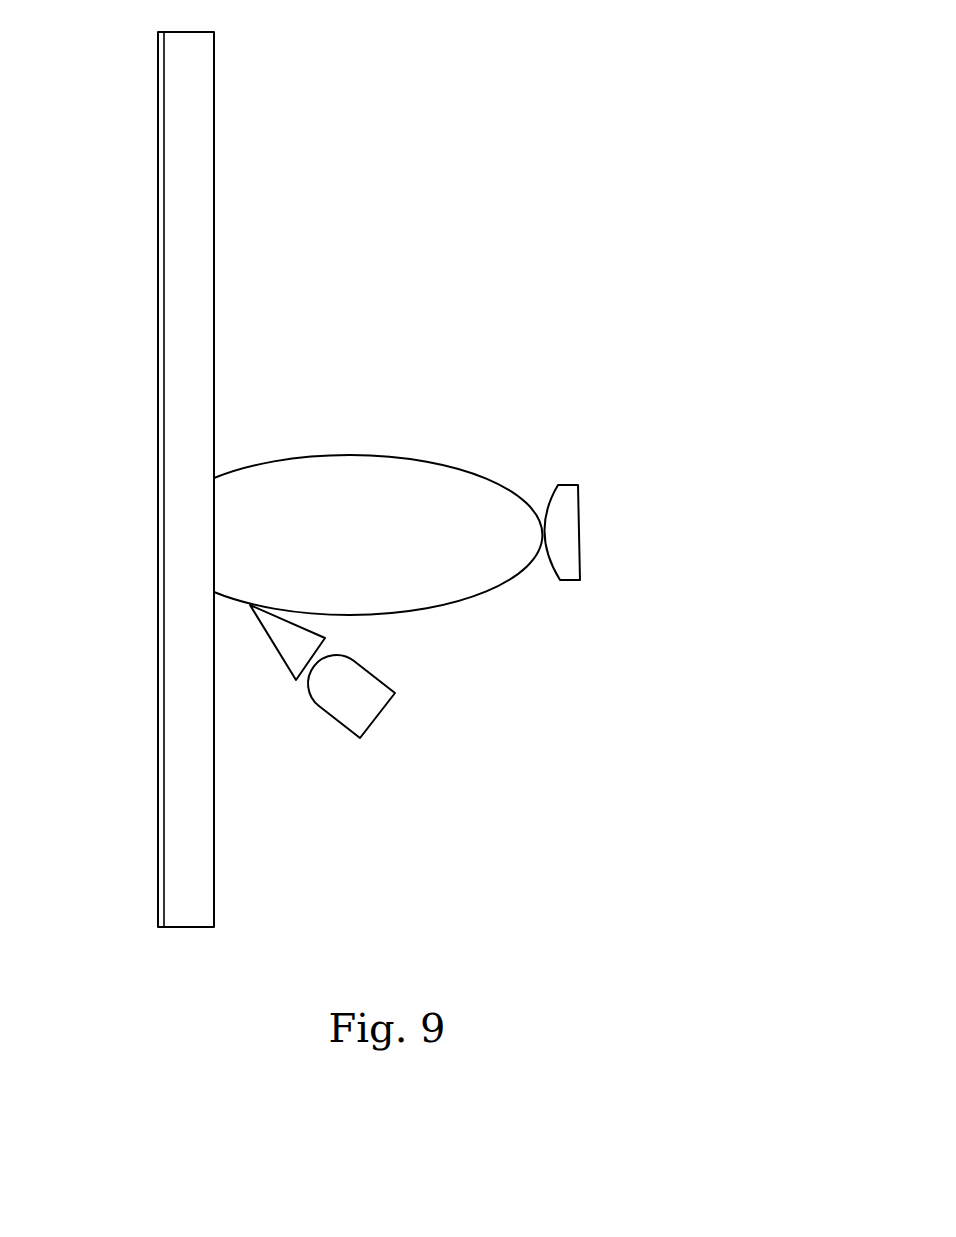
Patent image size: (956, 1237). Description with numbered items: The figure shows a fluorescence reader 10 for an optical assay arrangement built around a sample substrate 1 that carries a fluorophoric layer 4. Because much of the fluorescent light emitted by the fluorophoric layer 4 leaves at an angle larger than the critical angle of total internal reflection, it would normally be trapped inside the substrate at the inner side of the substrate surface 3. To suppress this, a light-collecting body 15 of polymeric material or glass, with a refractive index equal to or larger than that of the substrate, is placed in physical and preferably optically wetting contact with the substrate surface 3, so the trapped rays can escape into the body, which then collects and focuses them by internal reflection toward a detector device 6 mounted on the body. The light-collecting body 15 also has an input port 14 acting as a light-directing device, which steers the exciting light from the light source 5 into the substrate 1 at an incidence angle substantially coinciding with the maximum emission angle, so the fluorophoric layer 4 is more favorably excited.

The sample substrate 1 is at (213, 43).
The fluorophoric layer 4 is at (155, 335).
The substrate surface 3 is at (214, 363).
The fluorescence reader 10 is at (472, 283).
The light-collecting body 15 is at (392, 458).
The detector device 6 is at (582, 520).
The input port 14 is at (280, 657).
The light source 5 is at (377, 723).